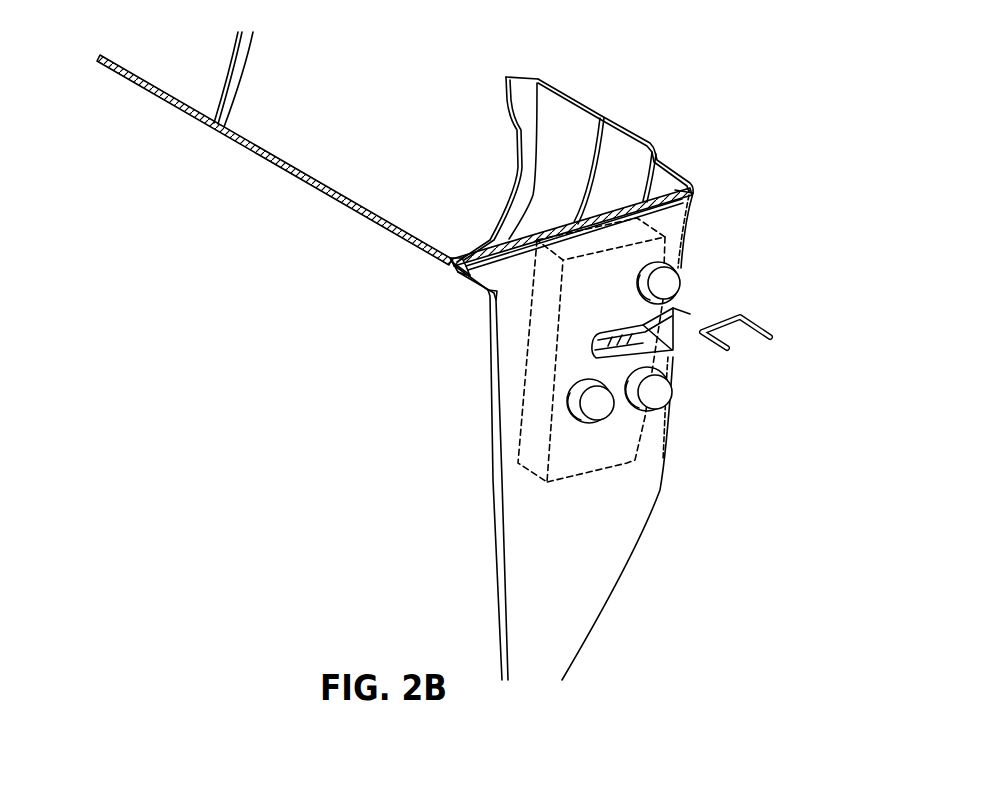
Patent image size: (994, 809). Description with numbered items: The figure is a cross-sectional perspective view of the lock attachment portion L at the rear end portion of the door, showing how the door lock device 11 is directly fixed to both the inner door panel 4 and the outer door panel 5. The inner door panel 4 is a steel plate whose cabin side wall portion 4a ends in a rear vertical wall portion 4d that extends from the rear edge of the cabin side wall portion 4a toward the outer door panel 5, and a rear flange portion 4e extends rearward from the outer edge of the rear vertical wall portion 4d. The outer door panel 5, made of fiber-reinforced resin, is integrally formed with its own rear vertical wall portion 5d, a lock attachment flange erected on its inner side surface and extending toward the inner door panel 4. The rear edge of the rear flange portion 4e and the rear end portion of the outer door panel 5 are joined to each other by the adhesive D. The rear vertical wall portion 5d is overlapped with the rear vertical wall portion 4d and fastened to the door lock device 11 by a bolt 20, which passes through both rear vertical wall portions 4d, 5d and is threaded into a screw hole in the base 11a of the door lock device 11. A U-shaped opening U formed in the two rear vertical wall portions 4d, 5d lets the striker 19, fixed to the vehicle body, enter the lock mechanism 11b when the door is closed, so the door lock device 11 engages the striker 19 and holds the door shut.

The inner door panel 4 is at (598, 359).
The cabin side wall portion 4a is at (617, 118).
The rear vertical wall portion 4d is at (660, 210).
The rear flange portion 4e is at (481, 272).
The outer door panel 5 is at (278, 237).
The rear vertical wall portion (lock attachment flange) 5d is at (558, 218).
The door lock device 11 is at (628, 463).
The base 11a is at (593, 450).
The lock mechanism 11b is at (673, 357).
The striker 19 is at (758, 318).
The bolt 20 is at (674, 281).
The adhesive D is at (455, 273).
The lock attachment portion L is at (469, 134).
The U-shaped opening U is at (665, 323).